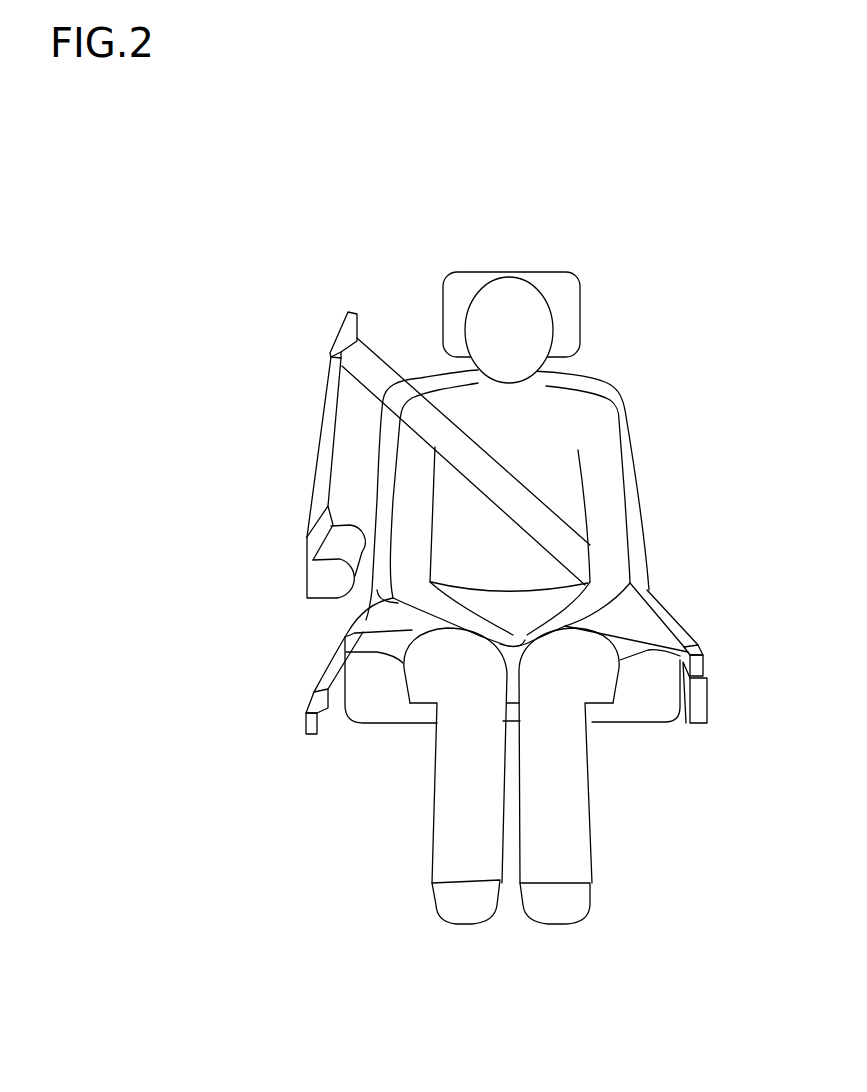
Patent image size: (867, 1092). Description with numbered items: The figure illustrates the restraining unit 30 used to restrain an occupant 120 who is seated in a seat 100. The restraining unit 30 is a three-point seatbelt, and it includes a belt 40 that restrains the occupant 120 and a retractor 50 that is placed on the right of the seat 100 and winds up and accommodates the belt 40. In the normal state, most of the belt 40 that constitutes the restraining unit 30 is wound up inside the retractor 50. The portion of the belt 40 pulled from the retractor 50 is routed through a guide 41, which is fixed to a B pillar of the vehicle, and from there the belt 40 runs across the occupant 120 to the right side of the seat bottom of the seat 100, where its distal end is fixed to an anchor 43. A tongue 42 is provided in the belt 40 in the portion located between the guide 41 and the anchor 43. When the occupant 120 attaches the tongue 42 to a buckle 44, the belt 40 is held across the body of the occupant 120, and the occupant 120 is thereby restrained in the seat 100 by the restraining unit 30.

The restraining unit 30 is at (325, 302).
The belt 40 is at (322, 460).
The guide 41 is at (353, 312).
The tongue 42 is at (704, 660).
The anchor 43 is at (306, 711).
The buckle 44 is at (708, 698).
The retractor 50 is at (306, 575).
The seat 100 is at (619, 383).
The occupant 120 is at (530, 283).